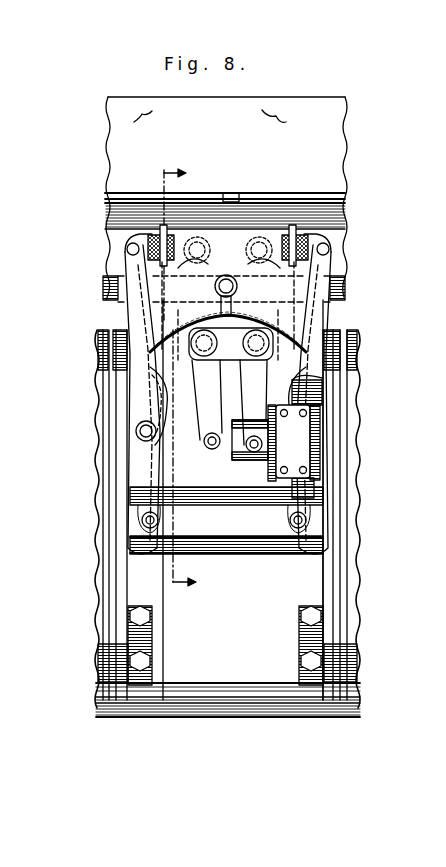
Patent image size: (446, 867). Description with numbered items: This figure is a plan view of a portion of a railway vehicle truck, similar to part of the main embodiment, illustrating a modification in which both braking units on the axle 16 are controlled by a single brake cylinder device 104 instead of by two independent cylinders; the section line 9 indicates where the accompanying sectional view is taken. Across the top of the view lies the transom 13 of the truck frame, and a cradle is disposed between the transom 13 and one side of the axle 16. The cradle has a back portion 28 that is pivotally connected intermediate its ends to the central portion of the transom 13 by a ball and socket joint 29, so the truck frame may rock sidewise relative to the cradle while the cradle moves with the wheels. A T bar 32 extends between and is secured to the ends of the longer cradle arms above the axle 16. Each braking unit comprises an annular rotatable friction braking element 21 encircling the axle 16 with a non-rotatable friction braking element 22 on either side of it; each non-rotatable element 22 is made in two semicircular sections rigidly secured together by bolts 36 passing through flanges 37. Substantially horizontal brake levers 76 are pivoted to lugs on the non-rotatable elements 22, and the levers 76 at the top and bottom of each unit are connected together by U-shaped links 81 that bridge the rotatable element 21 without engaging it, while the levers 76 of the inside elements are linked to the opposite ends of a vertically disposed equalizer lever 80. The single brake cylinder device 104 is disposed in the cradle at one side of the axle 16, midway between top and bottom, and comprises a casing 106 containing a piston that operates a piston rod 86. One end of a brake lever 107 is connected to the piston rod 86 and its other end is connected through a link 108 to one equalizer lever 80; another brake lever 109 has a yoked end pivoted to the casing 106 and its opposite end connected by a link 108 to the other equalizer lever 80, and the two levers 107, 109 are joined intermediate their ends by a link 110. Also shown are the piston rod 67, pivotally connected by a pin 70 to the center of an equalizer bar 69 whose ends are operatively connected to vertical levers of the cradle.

The transom 13 is at (348, 181).
The back portion 28 is at (296, 197).
The ball and socket joint 29 is at (240, 198).
The section line 9— 9 is at (187, 379).
The equalizer lever 80 is at (125, 228).
The equalizer bar 69 is at (103, 290).
The brake lever 76 is at (128, 316).
The link 81 is at (140, 384).
The rotatable friction braking element 21 is at (107, 623).
The non-rotatable friction braking element 22 is at (125, 648).
The flange 37 is at (152, 628).
The bolt 36 is at (152, 666).
The T bar 32 is at (222, 683).
The axle 16 is at (268, 535).
The link 108 is at (225, 272).
The pin 70 is at (238, 288).
The piston rod 67 is at (222, 310).
The link 110 is at (202, 364).
The brake lever 109 is at (262, 362).
The brake lever 107 is at (210, 416).
The piston rod 86 is at (220, 450).
The casing 106 is at (266, 455).
The brake cylinder device 104 is at (296, 440).